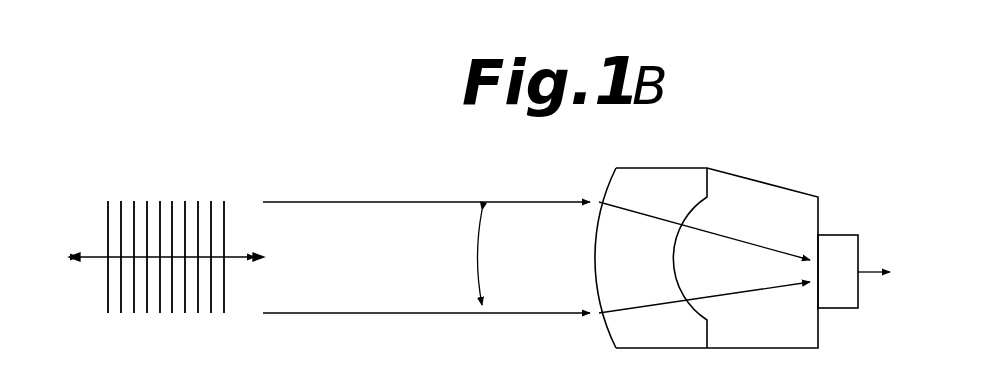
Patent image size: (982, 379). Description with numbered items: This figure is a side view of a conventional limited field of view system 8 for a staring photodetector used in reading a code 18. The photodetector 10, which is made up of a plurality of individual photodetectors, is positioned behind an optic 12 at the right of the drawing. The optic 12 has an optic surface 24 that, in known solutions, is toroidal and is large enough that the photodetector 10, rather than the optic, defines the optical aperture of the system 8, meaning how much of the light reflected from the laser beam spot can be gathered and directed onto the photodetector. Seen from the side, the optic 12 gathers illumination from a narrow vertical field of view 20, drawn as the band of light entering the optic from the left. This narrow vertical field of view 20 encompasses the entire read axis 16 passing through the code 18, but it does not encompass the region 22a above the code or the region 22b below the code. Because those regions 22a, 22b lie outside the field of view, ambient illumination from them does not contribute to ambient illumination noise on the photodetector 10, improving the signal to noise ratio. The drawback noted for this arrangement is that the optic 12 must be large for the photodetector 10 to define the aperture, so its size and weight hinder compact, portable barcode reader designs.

The limited field of view system 8 is at (864, 170).
The photodetector 10 is at (858, 248).
The optic 12 is at (765, 182).
The read axis 16 is at (92, 250).
The code 18 is at (108, 294).
The narrow vertical field of view 20 is at (477, 252).
The region above the code 22a is at (184, 178).
The region below the code 22b is at (184, 359).
The optic surface 24 is at (608, 328).